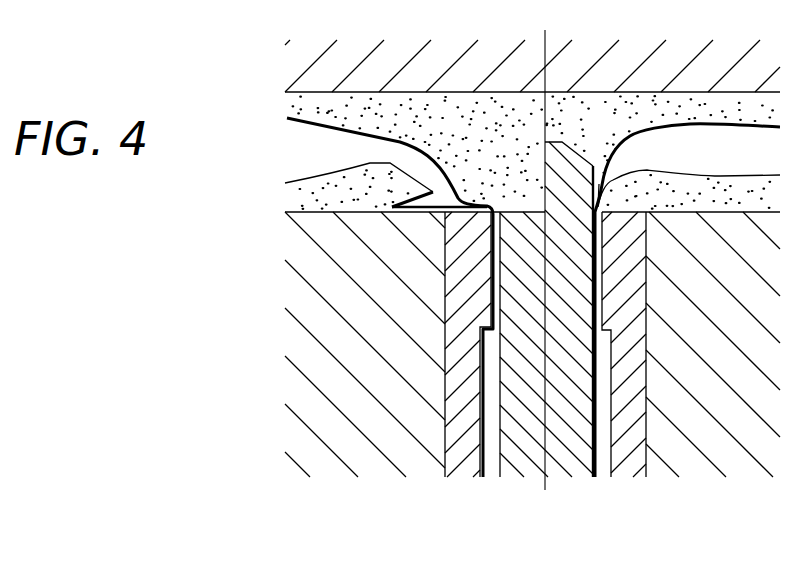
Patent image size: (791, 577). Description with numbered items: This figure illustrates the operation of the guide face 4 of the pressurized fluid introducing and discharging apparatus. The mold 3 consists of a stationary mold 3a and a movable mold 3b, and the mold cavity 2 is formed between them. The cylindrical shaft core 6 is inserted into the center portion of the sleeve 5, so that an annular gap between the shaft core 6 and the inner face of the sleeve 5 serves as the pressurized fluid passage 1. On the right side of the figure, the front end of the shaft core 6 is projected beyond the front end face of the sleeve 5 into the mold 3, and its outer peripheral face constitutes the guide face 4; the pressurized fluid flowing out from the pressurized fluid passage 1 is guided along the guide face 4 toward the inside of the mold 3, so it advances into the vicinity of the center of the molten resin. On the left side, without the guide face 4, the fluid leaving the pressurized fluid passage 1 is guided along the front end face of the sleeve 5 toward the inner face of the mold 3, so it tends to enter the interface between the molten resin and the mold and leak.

The pressurized fluid passage 1 is at (600, 437).
The mold cavity 2 is at (688, 92).
The mold 3 is at (240, 58).
The stationary mold 3a is at (320, 70).
The movable mold 3b is at (328, 240).
The guide face 4 is at (602, 178).
The sleeve 5 is at (647, 413).
The shaft core 6 is at (560, 172).